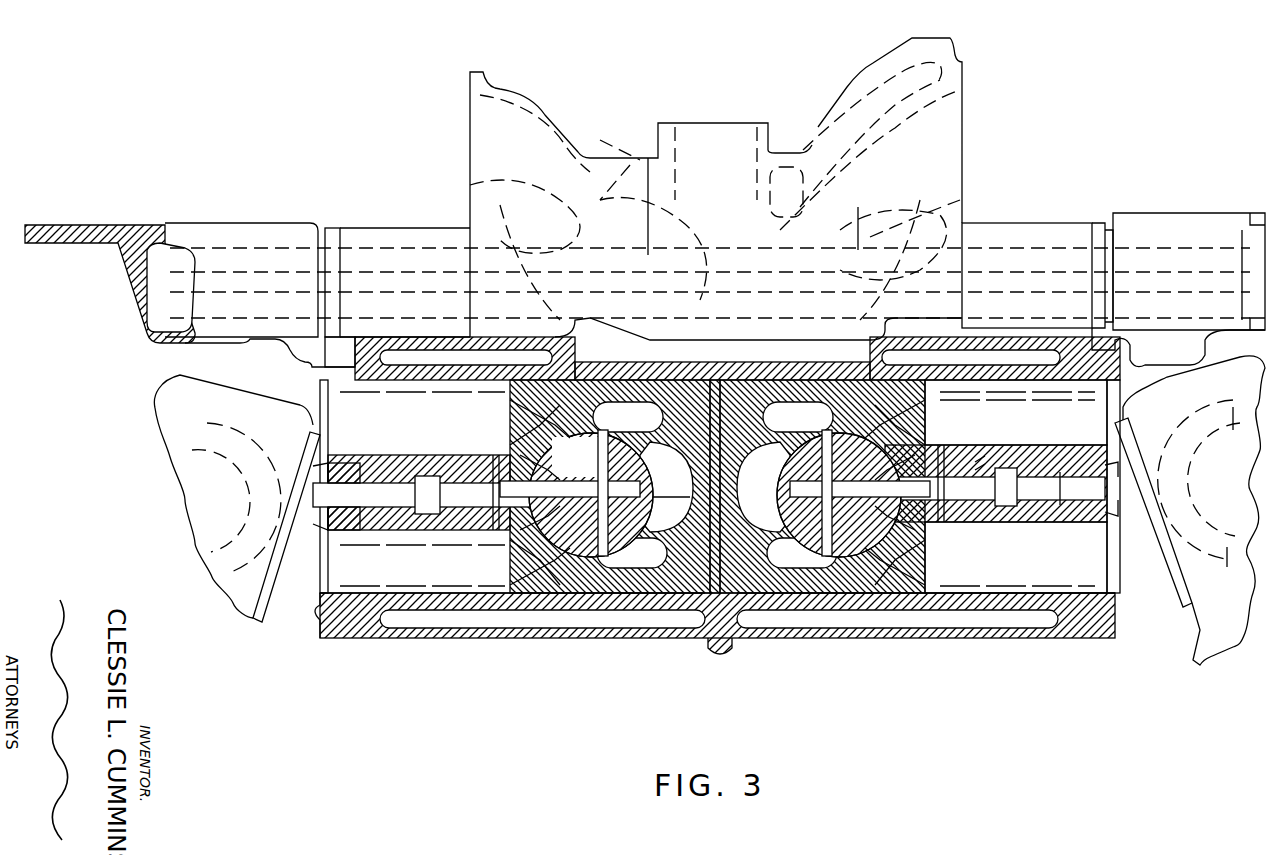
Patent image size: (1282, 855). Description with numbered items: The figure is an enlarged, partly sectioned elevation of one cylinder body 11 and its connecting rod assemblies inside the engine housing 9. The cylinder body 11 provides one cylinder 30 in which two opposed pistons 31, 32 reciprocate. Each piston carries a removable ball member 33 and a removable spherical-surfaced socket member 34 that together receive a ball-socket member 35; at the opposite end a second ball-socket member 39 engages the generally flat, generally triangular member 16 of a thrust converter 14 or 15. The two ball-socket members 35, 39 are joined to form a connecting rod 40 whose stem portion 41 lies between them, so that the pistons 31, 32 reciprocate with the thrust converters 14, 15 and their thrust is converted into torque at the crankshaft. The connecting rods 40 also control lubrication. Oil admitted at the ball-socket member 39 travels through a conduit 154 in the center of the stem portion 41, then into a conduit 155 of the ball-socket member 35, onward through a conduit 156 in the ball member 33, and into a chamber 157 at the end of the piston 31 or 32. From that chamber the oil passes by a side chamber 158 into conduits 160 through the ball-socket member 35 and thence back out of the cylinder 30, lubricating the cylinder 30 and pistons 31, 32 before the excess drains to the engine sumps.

The engine housing 9 is at (70, 225).
The cylinder body 11 is at (1073, 633).
The thrust converter 14 is at (1196, 642).
The thrust converter 15 is at (279, 616).
The generally flat, generally triangular member 16 is at (1220, 506).
The cylinder 30 is at (1016, 486).
The piston 31 is at (600, 600).
The piston 32 is at (858, 600).
The ball member 33 is at (810, 525).
The spherical-surfaced socket member 34 is at (545, 562).
The ball-socket member 35 is at (548, 450).
The ball-socket member 39 is at (709, 510).
The connecting rod 40 is at (418, 455).
The stem portion 41 is at (410, 512).
The conduit 154 is at (1060, 472).
The conduit 155 is at (975, 462).
The conduit 156 is at (665, 507).
The chamber 157 is at (716, 487).
The side chamber 158 is at (715, 485).
The conduits 160 is at (548, 435).